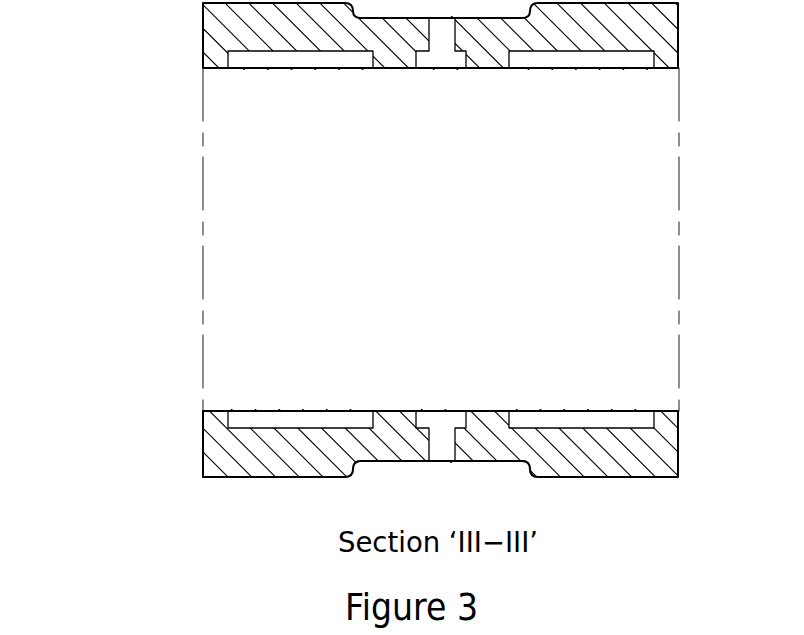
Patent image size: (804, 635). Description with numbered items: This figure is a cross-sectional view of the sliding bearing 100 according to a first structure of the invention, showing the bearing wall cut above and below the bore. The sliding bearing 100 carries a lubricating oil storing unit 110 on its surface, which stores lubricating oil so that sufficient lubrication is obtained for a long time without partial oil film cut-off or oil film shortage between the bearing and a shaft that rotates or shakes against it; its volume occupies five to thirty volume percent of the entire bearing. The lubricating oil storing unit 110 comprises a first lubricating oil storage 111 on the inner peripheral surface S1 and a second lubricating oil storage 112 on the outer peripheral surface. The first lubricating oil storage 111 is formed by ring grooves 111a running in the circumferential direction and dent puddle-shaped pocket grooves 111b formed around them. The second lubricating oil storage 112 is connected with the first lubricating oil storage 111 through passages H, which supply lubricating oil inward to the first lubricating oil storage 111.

The sliding bearing 100 is at (236, 23).
The passages H is at (442, 34).
The lubricating oil storing unit 110 is at (560, 260).
The first lubricating oil storage 111 is at (448, 311).
The ring grooves 111a is at (434, 418).
The pocket grooves 111b is at (297, 417).
The second lubricating oil storage 112 is at (492, 468).
The inner peripheral surface S1 is at (584, 410).